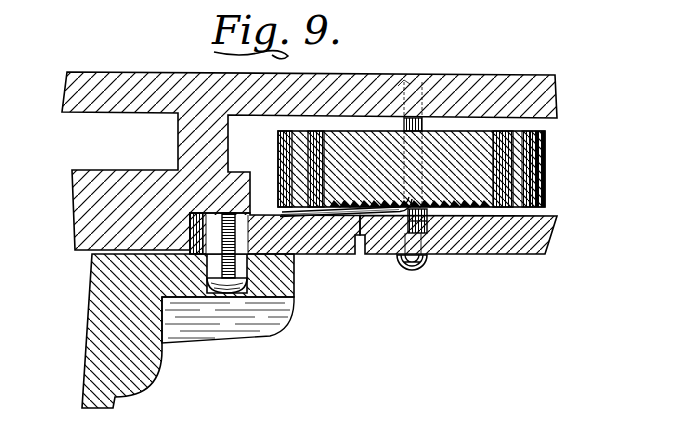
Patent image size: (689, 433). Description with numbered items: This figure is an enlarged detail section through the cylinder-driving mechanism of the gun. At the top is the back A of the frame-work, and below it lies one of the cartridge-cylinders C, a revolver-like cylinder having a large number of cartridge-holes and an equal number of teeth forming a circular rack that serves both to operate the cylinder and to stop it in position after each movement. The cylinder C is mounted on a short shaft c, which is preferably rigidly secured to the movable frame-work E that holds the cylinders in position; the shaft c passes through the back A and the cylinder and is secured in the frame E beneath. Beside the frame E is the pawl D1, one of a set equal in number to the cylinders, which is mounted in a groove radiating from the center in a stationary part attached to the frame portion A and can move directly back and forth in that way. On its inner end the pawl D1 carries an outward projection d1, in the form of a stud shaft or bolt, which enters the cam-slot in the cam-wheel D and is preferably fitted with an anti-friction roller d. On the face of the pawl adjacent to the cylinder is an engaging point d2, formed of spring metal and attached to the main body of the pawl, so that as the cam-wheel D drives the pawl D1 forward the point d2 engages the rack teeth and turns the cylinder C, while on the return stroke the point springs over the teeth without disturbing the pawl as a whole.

The back of the frame-work A is at (120, 88).
The cartridge-cylinder C is at (560, 175).
The short shaft c is at (424, 123).
The cam-wheel D is at (95, 271).
The pawl D1 is at (320, 253).
The anti-friction roller d is at (208, 262).
The outward projection d1 is at (222, 289).
The engaging point d2 is at (428, 222).
The movable frame-work E is at (532, 248).